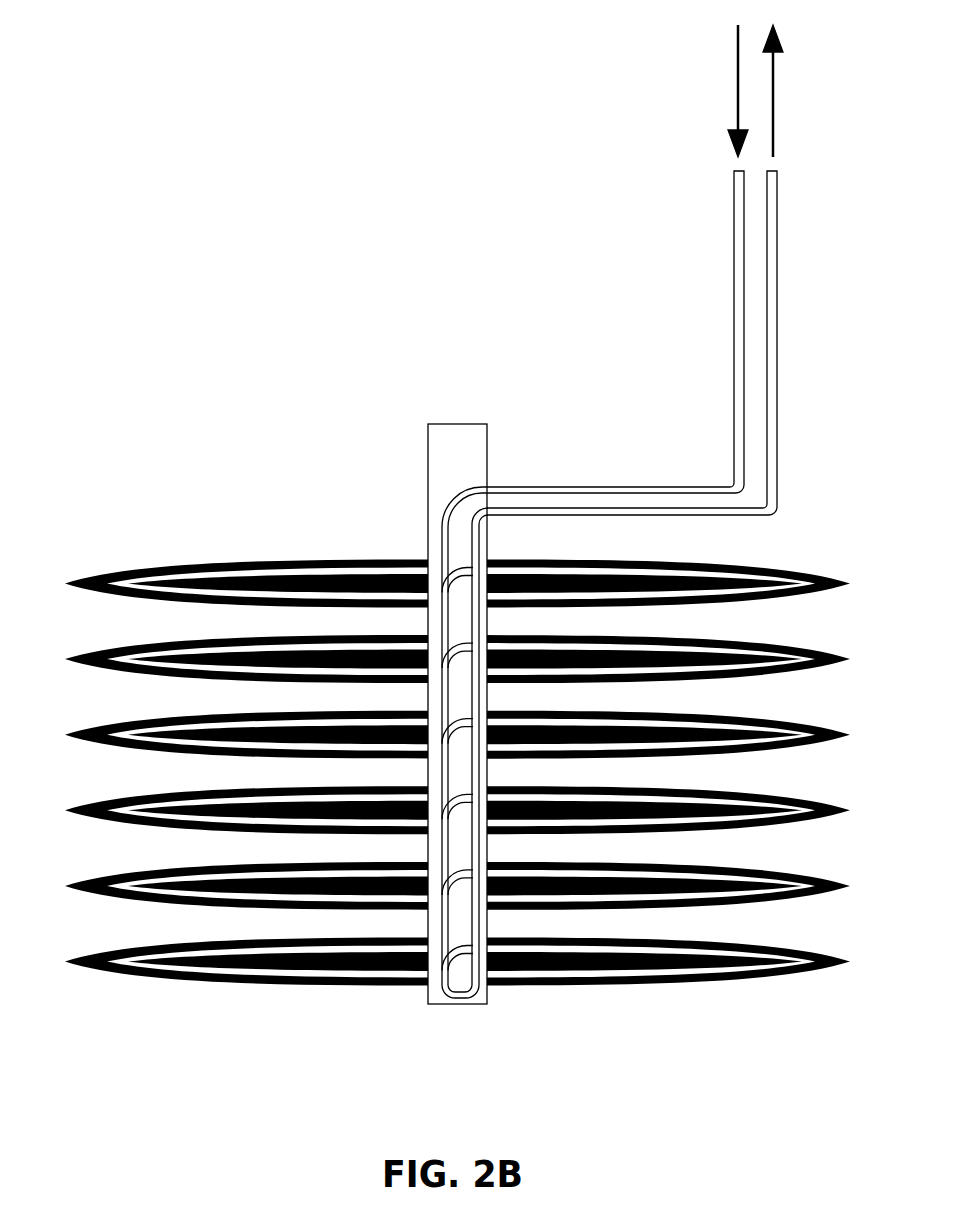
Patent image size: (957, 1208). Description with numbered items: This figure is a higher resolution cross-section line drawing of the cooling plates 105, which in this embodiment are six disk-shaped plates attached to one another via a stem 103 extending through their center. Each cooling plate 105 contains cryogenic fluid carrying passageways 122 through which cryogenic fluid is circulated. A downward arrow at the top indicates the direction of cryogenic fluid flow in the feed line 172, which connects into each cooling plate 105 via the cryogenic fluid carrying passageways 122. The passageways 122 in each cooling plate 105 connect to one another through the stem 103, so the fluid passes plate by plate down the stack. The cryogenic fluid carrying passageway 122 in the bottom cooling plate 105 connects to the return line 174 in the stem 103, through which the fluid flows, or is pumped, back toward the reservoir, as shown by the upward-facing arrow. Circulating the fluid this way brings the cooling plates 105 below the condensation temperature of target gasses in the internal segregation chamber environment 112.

The stem 103 is at (427, 482).
The cooling plates 105 is at (562, 982).
The internal segregation chamber environment 112 is at (459, 551).
The cryogenic fluid carrying passageways 122 is at (287, 568).
The feed line 172 is at (735, 423).
The return line 174 is at (777, 393).